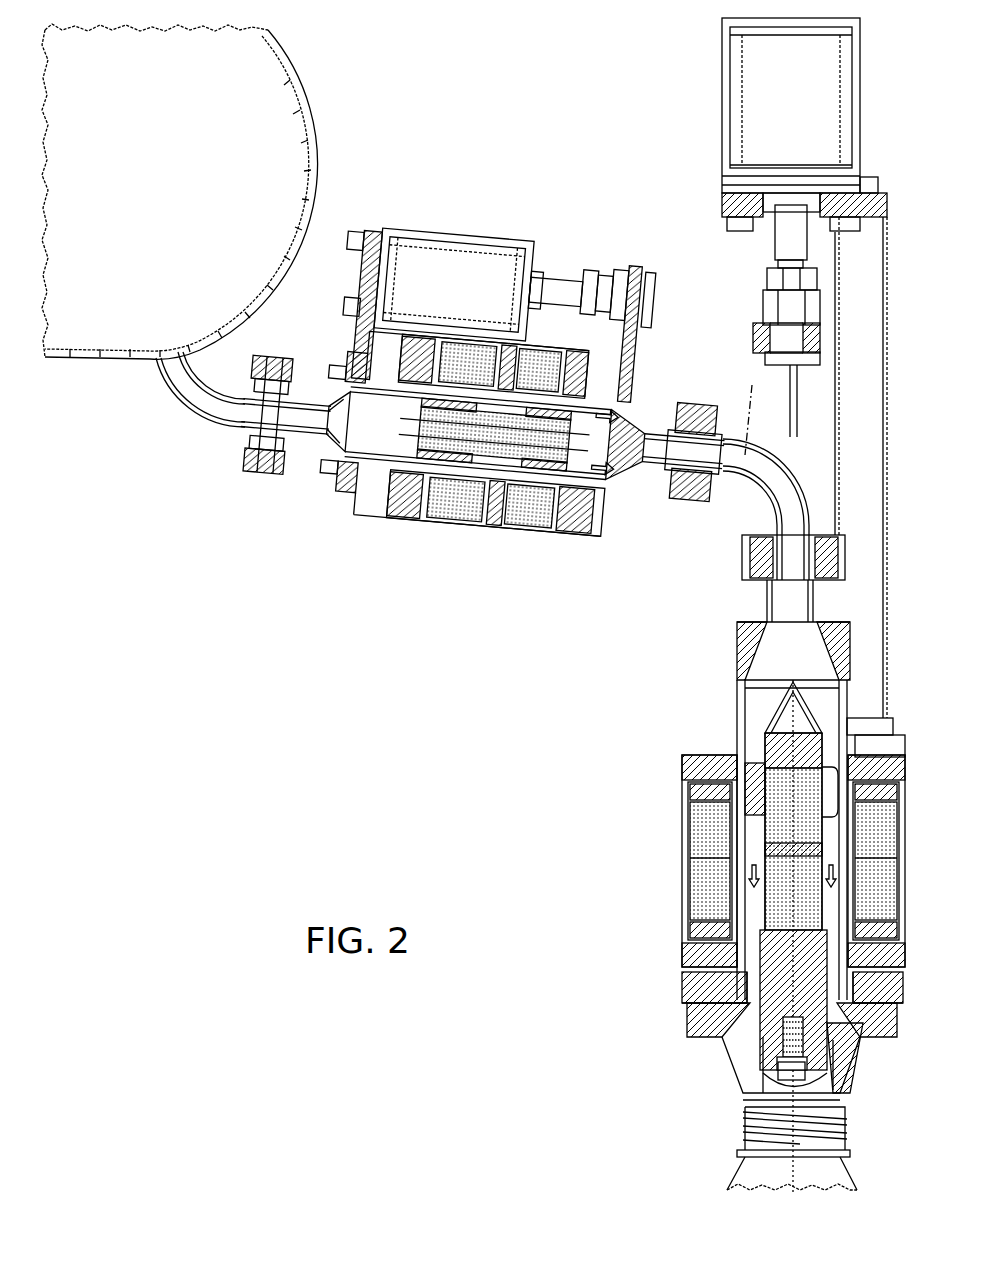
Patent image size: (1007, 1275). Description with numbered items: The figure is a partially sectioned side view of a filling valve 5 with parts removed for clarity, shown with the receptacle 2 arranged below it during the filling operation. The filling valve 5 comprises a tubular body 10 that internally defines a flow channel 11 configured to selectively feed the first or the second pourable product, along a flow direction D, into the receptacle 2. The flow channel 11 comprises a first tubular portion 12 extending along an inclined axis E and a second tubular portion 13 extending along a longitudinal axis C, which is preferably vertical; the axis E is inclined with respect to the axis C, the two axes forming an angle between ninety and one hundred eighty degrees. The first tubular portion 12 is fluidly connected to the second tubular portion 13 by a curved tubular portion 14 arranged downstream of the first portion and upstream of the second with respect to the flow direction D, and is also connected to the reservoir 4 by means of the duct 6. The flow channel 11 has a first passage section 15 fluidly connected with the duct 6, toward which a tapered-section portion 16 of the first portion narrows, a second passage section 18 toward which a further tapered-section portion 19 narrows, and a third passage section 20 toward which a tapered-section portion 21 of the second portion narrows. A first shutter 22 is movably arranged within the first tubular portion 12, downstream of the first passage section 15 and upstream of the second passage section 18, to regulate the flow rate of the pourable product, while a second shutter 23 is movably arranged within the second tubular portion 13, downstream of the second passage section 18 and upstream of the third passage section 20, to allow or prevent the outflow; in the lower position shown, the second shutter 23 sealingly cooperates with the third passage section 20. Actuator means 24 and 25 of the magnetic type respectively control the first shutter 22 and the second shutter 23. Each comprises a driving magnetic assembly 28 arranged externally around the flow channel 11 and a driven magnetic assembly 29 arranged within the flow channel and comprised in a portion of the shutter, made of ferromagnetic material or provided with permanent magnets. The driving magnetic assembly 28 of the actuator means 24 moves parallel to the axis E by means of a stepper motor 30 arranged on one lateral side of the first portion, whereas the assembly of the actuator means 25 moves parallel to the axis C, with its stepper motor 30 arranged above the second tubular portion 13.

The receptacle 2 is at (755, 1140).
The reservoir 4 is at (252, 133).
The filling valve 5 is at (541, 158).
The duct 6 is at (173, 413).
The tubular body 10 is at (744, 632).
The flow channel 11 is at (800, 595).
The first tubular portion 12 is at (492, 405).
The second tubular portion 13 is at (834, 689).
The curved tubular portion 14 is at (780, 472).
The first passage section 15 is at (318, 403).
The tapered-section portion 16 is at (352, 398).
The second passage section 18 is at (662, 438).
The further tapered-section portion 19 is at (628, 432).
The third passage section 20 is at (856, 1083).
The tapered-section portion 21 is at (834, 1043).
The first shutter 22 is at (420, 432).
The second shutter 23 is at (775, 985).
The actuator means 24 is at (565, 545).
The actuator means 25 is at (660, 822).
The driving magnetic assembly 28 is at (592, 363).
The driven magnetic assembly 29 is at (513, 454).
The stepper motor 30 is at (460, 255).
The longitudinal axis C is at (778, 1071).
The flow direction D is at (600, 410).
The inclined axis E is at (742, 406).